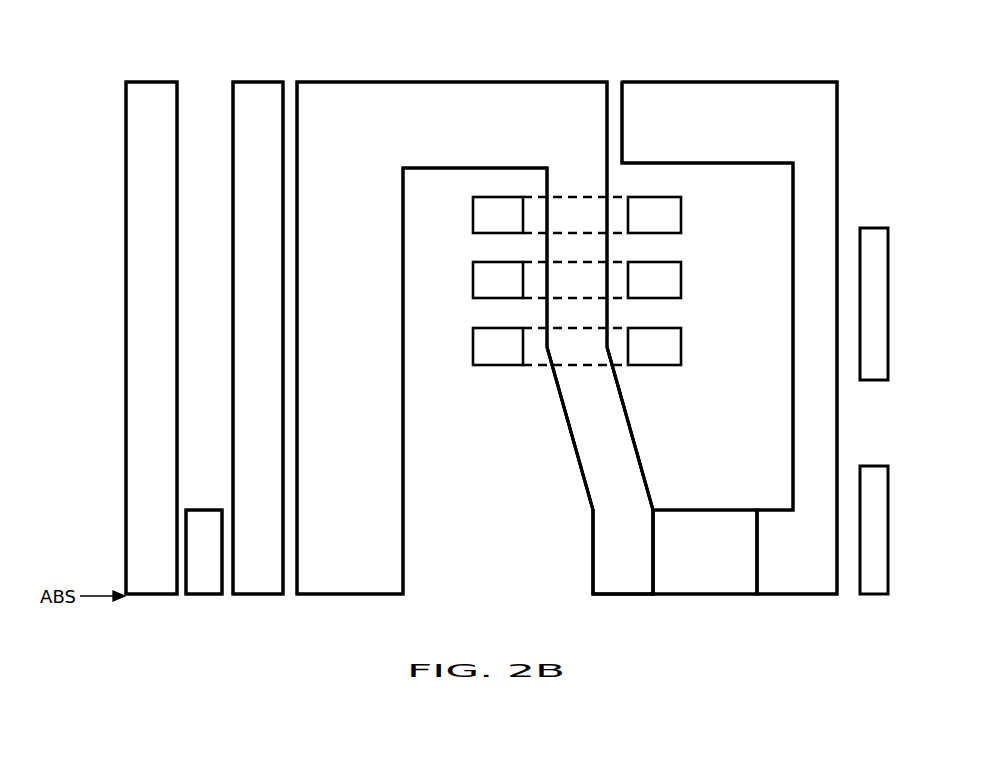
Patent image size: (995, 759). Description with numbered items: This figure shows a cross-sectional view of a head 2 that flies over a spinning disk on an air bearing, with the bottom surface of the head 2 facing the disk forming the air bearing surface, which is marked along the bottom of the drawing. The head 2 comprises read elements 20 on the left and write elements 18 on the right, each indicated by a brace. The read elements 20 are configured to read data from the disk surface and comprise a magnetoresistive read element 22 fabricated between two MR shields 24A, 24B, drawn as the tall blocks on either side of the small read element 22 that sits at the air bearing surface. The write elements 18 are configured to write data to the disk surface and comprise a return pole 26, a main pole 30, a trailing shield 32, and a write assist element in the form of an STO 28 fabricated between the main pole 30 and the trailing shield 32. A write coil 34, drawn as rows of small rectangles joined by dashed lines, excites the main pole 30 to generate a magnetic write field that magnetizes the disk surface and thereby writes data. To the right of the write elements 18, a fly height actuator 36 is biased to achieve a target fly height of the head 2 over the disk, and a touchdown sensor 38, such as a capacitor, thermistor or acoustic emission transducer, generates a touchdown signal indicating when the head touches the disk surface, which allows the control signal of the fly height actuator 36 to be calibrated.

The head 2 is at (93, 57).
The write elements 18 is at (295, 72).
The read elements 20 is at (287, 72).
The magnetoresistive (MR) read element 22 is at (204, 594).
The first read shield 24A is at (150, 594).
The second read shield 24B is at (258, 594).
The return pole 26 is at (352, 594).
The spin torque oscillator (STO) 28 is at (706, 594).
The main pole 30 is at (621, 594).
The trailing shield 32 is at (799, 594).
The write coil 34 is at (498, 367).
The fly height actuator (FHA) 36 is at (873, 382).
The touchdown sensor 38 is at (874, 594).